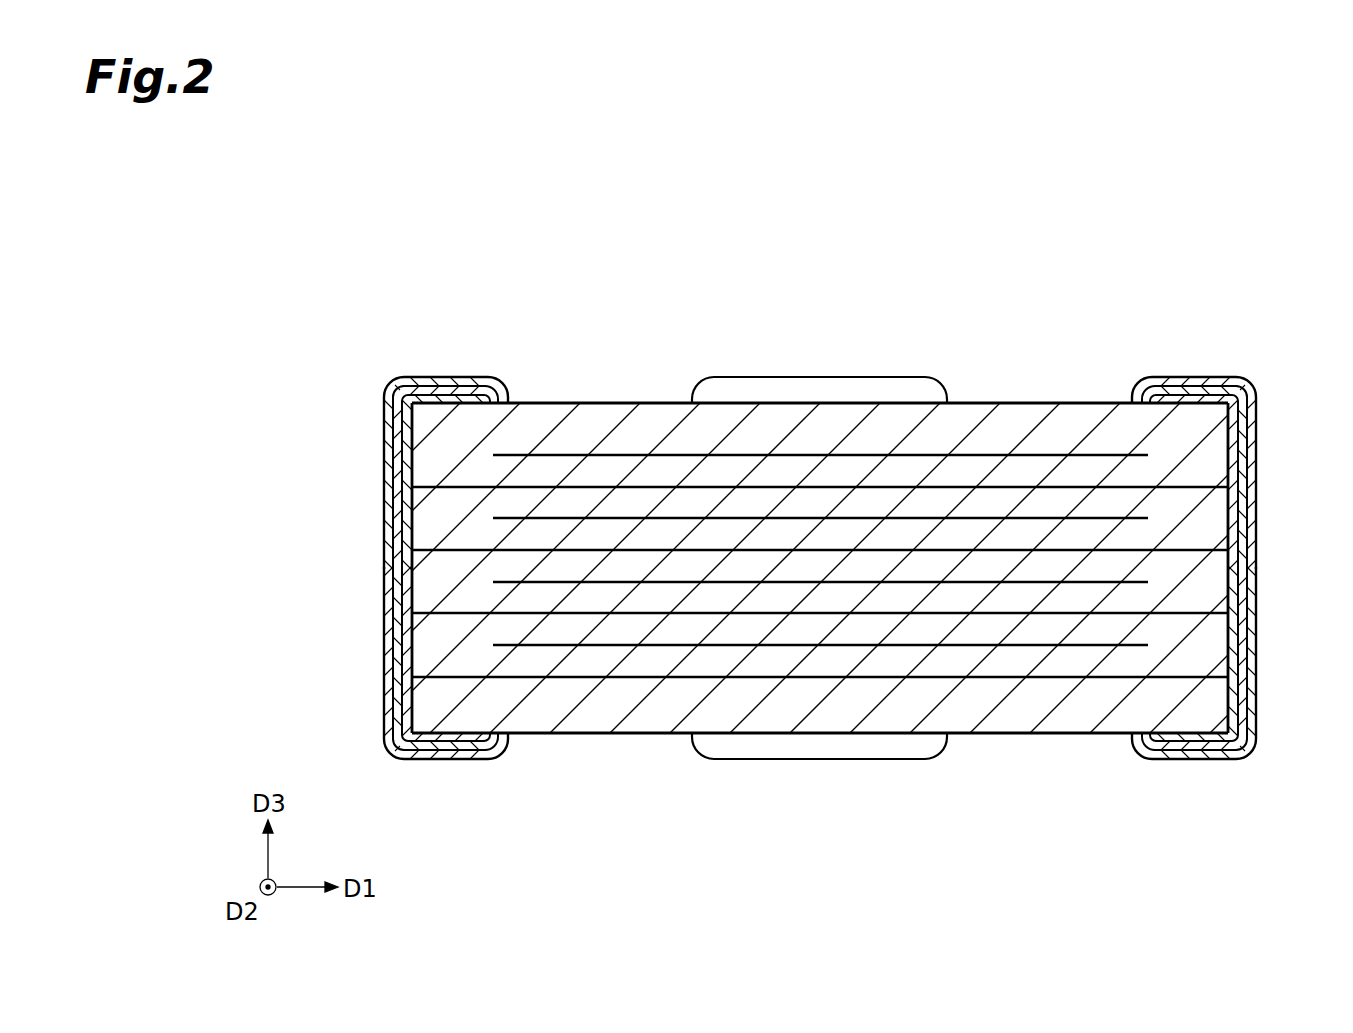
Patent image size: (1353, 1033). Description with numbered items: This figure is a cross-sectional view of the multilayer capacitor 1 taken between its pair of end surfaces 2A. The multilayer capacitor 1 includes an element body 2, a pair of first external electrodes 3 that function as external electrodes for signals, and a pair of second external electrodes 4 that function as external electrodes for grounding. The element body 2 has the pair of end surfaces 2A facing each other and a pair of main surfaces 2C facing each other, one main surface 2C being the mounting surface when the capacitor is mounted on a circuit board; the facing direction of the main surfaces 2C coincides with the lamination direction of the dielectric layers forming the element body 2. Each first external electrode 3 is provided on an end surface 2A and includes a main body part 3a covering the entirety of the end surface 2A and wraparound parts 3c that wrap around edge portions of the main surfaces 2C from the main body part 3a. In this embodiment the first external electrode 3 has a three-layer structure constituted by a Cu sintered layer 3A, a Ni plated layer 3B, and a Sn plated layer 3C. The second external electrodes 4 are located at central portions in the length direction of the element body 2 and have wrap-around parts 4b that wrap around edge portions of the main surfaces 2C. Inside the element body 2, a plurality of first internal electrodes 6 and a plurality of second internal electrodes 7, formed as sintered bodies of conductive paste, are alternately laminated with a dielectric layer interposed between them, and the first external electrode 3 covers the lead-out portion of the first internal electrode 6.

The multilayer capacitor 1 is at (385, 258).
The element body 2 is at (568, 399).
The end surface 2A is at (412, 662).
The main surface 2C is at (613, 400).
The first external electrode 3 is at (366, 517).
The main body part 3a is at (388, 454).
The Cu sintered layer 3A is at (392, 543).
The Ni plated layer 3B is at (400, 577).
The Sn plated layer 3C is at (405, 607).
The wraparound part 3c is at (456, 380).
The second external electrode 4 is at (759, 374).
The wrap-around part 4b is at (850, 384).
The first internal electrode 6 is at (545, 490).
The second internal electrode 7 is at (1025, 457).